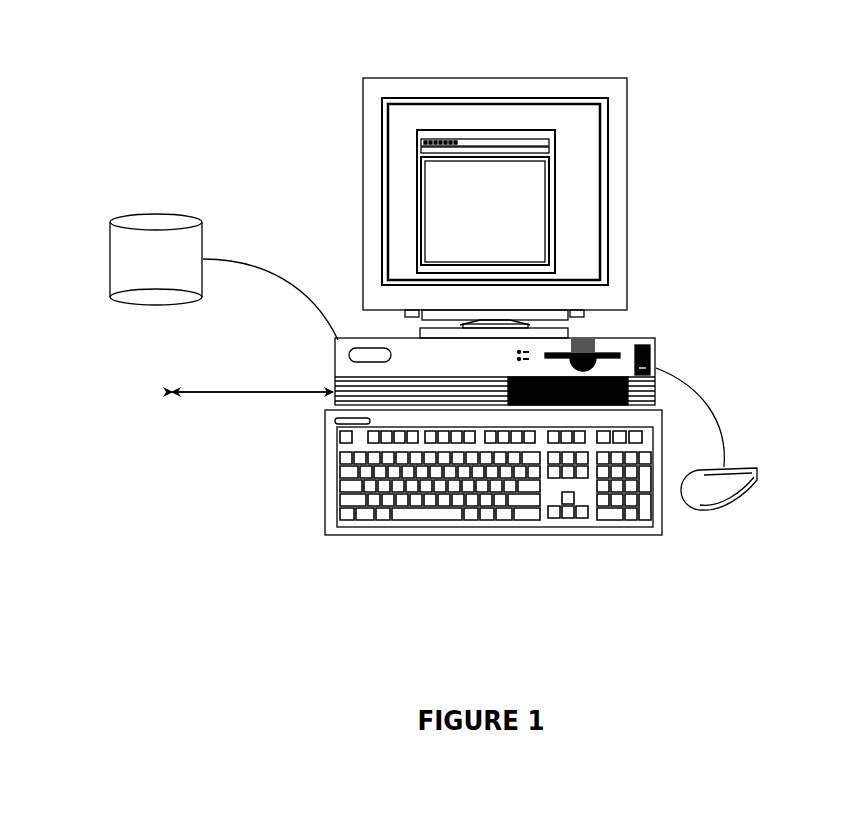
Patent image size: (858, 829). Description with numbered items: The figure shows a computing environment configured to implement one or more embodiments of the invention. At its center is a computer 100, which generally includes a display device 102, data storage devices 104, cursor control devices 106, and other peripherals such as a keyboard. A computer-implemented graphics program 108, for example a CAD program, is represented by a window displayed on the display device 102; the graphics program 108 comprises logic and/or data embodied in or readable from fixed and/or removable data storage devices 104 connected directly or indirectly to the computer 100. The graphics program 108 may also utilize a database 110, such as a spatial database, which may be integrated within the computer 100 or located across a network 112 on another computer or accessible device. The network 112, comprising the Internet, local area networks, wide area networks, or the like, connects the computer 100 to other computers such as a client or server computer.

The computer 100 is at (585, 353).
The display device 102 is at (609, 77).
The data storage devices 104 is at (611, 352).
The cursor control devices 106 is at (741, 514).
The graphics program 108 is at (557, 199).
The database 110 is at (224, 280).
The network 112 is at (213, 393).